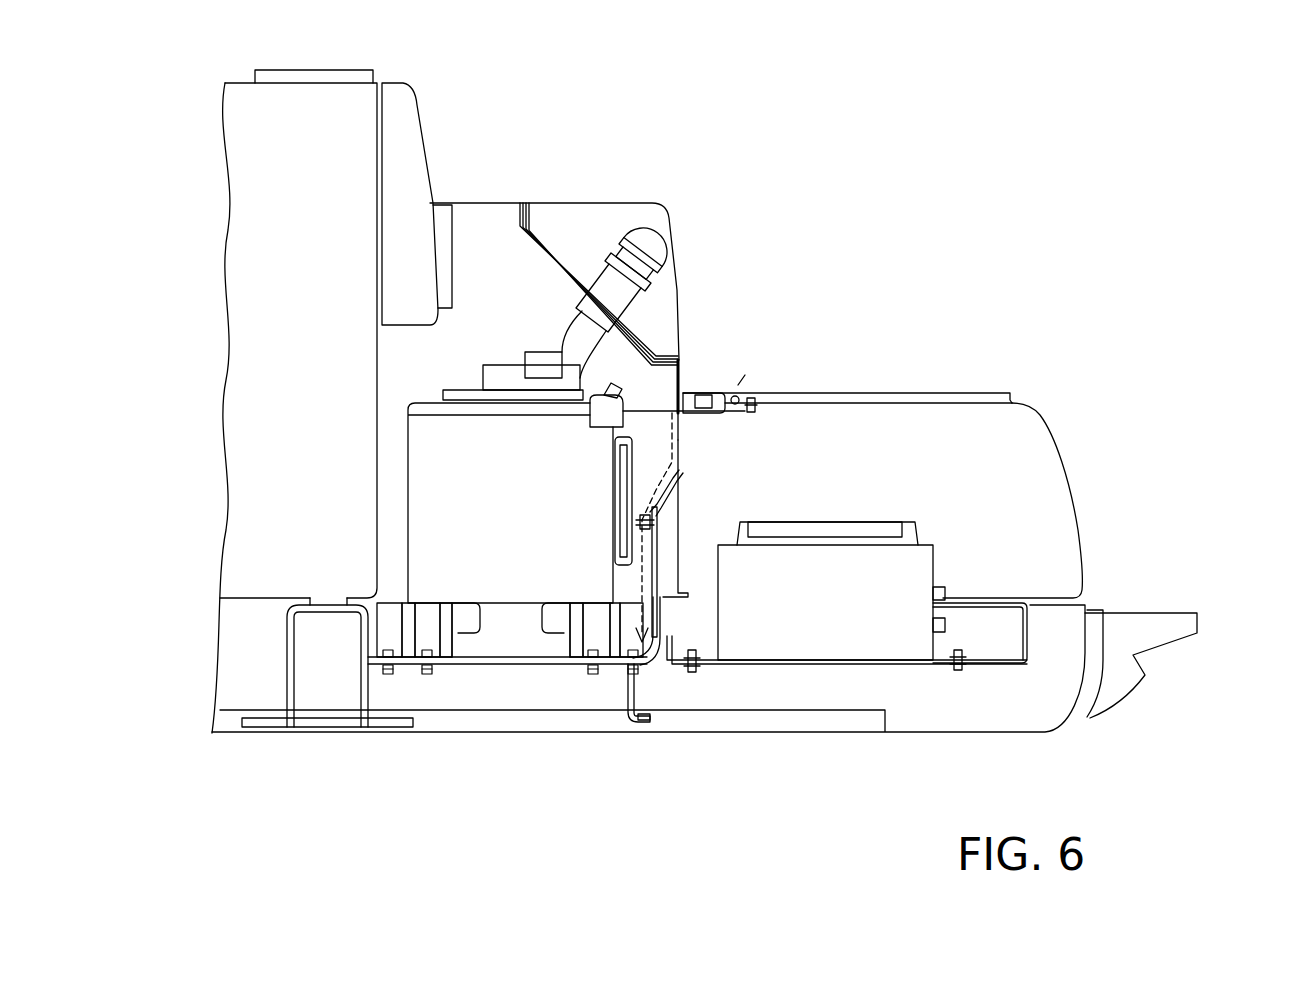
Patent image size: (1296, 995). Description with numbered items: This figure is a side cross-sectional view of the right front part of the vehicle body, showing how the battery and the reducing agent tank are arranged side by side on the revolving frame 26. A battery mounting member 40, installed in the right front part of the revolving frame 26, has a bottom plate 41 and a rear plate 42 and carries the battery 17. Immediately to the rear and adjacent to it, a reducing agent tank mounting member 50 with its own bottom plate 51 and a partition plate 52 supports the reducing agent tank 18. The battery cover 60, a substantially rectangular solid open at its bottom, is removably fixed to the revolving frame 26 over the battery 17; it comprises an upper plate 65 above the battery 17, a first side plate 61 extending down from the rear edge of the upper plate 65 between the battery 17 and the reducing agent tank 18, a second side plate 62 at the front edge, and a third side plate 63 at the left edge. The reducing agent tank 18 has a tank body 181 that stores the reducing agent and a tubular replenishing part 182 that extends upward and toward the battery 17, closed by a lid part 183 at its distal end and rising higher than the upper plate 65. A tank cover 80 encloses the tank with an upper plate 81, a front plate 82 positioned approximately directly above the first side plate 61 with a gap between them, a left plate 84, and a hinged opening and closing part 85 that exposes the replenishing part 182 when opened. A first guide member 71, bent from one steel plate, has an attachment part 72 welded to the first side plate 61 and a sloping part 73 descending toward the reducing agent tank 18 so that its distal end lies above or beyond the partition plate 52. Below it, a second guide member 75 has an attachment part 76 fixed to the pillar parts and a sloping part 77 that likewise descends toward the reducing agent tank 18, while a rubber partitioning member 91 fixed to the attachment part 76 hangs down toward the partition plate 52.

The reducing agent tank 18 is at (395, 500).
The upper plate 81 is at (473, 202).
The left plate 84 is at (477, 262).
The tank cover 80 is at (522, 189).
The front plate 82 is at (682, 373).
The opening and closing part 85 is at (643, 202).
The lid part 183 is at (630, 234).
The replenishing part 182 is at (670, 290).
The tank body 181 is at (445, 428).
The sloping part 77 is at (660, 497).
The attachment part 76 is at (643, 515).
The partitioning member 91 is at (653, 587).
The attachment part 72 is at (678, 470).
The first guide member 71 is at (680, 488).
The sloping part 73 is at (682, 495).
The first side plate 61 is at (680, 445).
The second guide member 75 is at (670, 503).
The upper plate 65 is at (782, 393).
The third side plate 63 is at (988, 438).
The battery cover 60 is at (863, 381).
The second side plate 62 is at (1060, 455).
The battery 17 is at (803, 645).
The bottom plate 41 is at (727, 665).
The battery mounting member 40 is at (712, 677).
The reducing agent tank mounting member 50 is at (583, 678).
The bottom plate 51 is at (558, 660).
The partition plate 52 is at (657, 650).
The rear plate 42 is at (672, 664).
The revolving frame 26 is at (1172, 673).